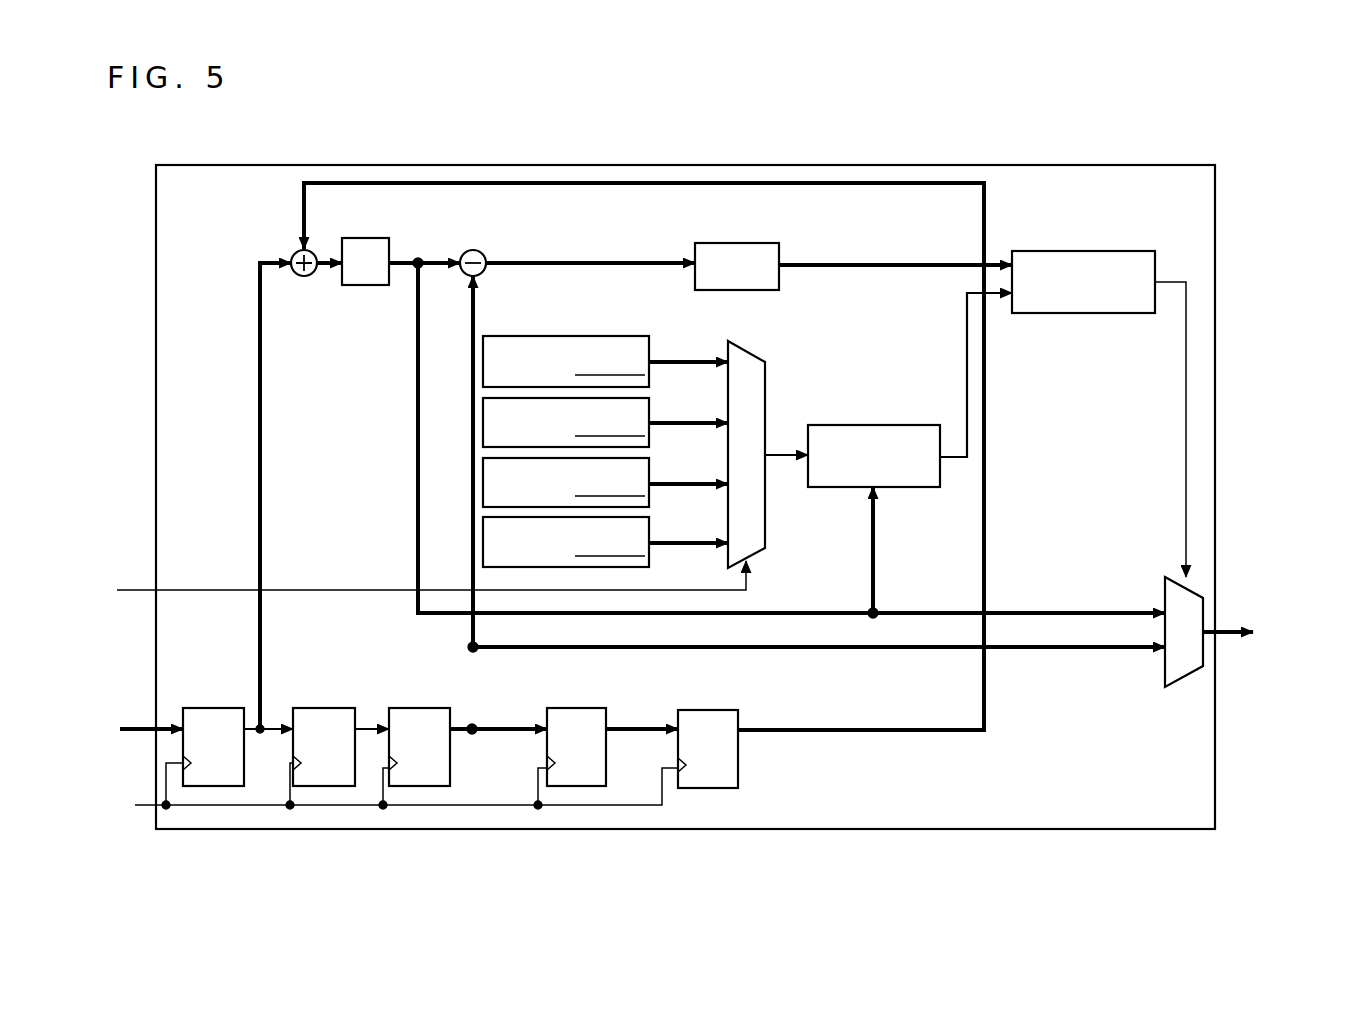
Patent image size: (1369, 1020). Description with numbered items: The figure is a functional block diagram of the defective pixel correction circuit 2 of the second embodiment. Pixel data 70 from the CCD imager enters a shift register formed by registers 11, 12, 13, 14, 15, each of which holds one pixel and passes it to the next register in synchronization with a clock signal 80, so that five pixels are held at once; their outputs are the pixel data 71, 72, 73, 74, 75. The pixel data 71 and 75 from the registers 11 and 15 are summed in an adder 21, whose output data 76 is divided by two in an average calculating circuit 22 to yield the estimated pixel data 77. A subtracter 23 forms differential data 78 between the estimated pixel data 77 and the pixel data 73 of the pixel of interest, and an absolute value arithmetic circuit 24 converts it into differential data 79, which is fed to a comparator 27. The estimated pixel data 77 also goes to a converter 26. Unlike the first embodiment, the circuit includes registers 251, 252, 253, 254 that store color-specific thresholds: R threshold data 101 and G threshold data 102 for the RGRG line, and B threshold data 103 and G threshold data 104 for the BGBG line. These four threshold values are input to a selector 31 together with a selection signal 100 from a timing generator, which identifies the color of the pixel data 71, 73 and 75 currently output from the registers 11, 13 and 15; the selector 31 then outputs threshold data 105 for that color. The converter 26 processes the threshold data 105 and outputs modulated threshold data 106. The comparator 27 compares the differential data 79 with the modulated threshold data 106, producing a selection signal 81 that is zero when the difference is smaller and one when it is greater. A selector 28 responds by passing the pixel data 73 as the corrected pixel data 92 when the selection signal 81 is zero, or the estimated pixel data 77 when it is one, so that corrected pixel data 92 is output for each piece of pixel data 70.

The defective pixel correction circuit 2 is at (688, 167).
The register 11 is at (207, 708).
The register 12 is at (317, 705).
The register 13 is at (412, 708).
The register 14 is at (570, 708).
The register 15 is at (702, 710).
The adder 21 is at (306, 278).
The average calculating circuit 22 is at (366, 238).
The subtracter 23 is at (469, 247).
The absolute value arithmetic circuit 24 is at (734, 242).
The converter 26 is at (887, 424).
The comparator 27 is at (1109, 251).
The selector 28 is at (1180, 690).
The selector 31 is at (743, 352).
The pixel data 70 is at (135, 725).
The pixel data 71 is at (252, 735).
The pixel data 72 is at (365, 726).
The pixel data 73 is at (458, 735).
The pixel data 74 is at (632, 735).
The pixel data 75 is at (833, 736).
The output data 76 is at (319, 255).
The estimated pixel data 77 is at (403, 255).
The differential data 78 is at (613, 262).
The differential data 79 is at (906, 265).
The clock signal 80 is at (135, 800).
The selection signal 81 is at (1180, 281).
The corrected pixel data 92 is at (1227, 628).
The selection signal 100 is at (130, 590).
The R threshold data 101 is at (670, 362).
The G threshold data 102 is at (672, 425).
The B threshold data 103 is at (672, 485).
The G threshold data 104 is at (672, 545).
The threshold data 105 is at (780, 447).
The modulated threshold data 106 is at (948, 462).
The register 251 is at (566, 361).
The register 252 is at (566, 422).
The register 253 is at (566, 482).
The register 254 is at (566, 542).